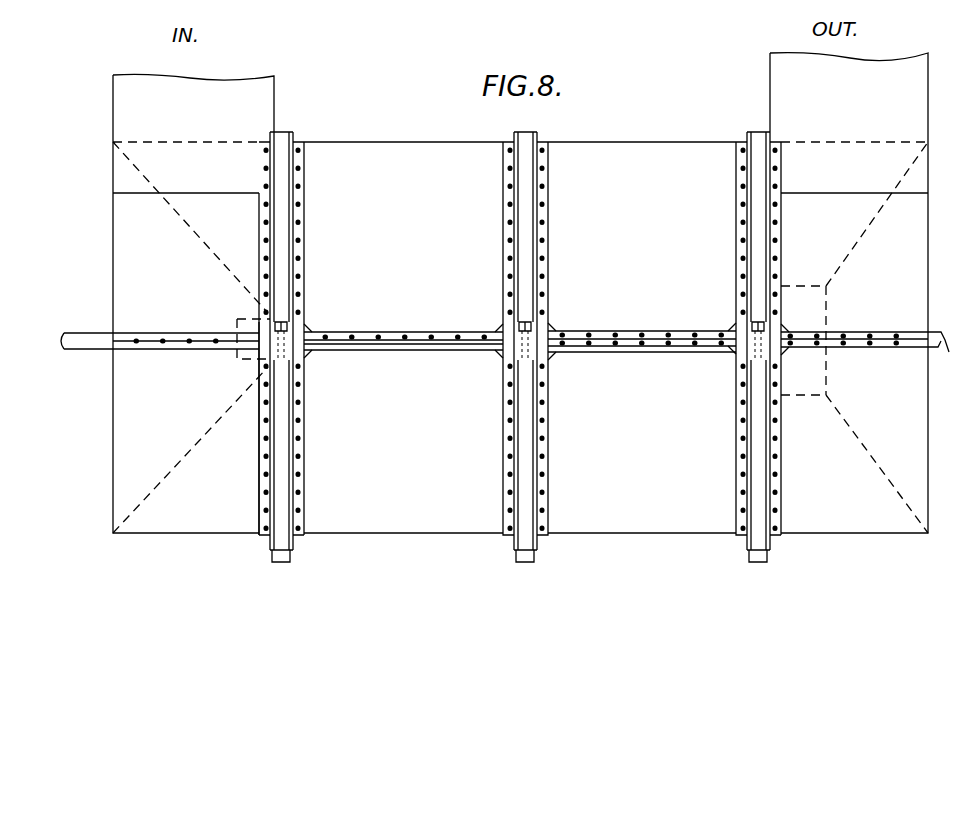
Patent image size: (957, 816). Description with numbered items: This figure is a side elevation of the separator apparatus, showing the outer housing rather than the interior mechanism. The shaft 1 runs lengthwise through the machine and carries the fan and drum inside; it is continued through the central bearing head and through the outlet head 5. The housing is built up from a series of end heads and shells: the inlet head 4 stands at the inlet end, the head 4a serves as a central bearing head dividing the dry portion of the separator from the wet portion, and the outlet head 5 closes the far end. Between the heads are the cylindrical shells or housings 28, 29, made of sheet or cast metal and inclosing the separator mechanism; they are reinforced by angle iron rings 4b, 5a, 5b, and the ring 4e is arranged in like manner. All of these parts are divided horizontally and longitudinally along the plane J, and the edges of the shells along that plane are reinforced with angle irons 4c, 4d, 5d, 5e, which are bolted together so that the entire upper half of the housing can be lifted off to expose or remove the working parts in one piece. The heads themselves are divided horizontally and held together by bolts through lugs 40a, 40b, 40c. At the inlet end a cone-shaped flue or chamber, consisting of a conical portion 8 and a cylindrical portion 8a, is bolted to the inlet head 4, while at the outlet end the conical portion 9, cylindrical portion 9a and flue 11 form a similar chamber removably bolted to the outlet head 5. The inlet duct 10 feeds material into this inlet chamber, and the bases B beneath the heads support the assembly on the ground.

The shaft 1 is at (82, 333).
The inlet head 4 is at (282, 250).
The outlet head 4a is at (758, 243).
The angle iron ring 4b is at (303, 421).
The angle iron 4c is at (413, 351).
The angle iron 4d is at (385, 332).
The third column lower part 4e is at (746, 413).
The outlet head 5 is at (525, 230).
The angle iron ring 5a is at (506, 413).
The angle iron ring 5b is at (549, 418).
The angle iron 5d is at (626, 332).
The angle iron 5e is at (652, 351).
The conical portion of inlet flue 8 is at (112, 272).
The cylindrical portion of inlet flue 8a is at (178, 533).
The conical portion of outlet flue 9 is at (860, 228).
The cylindrical portion of outlet flue 9a is at (845, 533).
The inlet duct 10 is at (230, 80).
The outlet flue 11 is at (876, 54).
The shell or housing 28 is at (402, 143).
The shell or housing 29 is at (638, 143).
The lug 40a is at (290, 333).
The clip at third column 40b is at (768, 338).
The lug 40c is at (532, 336).
The column base / foot B is at (283, 555).
The dividing plane J is at (110, 346).